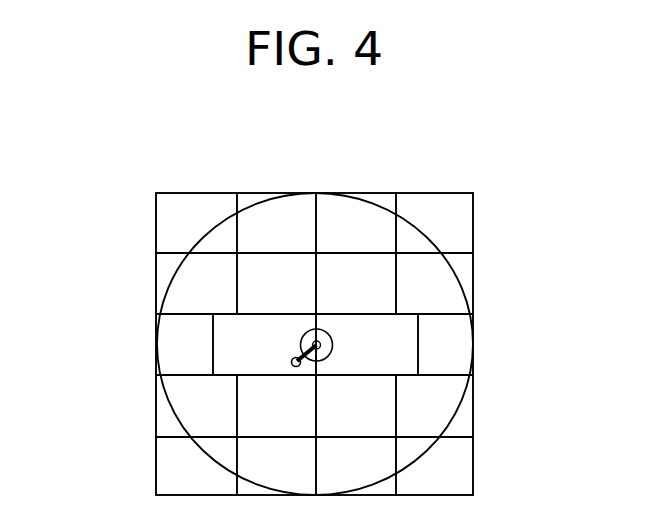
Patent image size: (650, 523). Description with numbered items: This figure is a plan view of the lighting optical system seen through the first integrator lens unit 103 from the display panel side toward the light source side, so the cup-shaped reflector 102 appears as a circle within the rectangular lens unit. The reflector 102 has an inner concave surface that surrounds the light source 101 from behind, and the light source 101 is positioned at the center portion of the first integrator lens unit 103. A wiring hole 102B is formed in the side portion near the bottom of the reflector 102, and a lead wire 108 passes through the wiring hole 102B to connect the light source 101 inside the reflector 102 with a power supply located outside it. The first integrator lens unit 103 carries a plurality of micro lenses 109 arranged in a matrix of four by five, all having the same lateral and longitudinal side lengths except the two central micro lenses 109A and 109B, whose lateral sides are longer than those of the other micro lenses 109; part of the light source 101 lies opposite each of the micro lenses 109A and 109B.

The light source 101 is at (338, 323).
The reflector 102 is at (430, 230).
The wiring hole 102B is at (293, 361).
The first integrator lens unit 103 is at (450, 193).
The lead wire 108 is at (298, 356).
The micro lenses 109 is at (178, 207).
The micro lens 109A is at (228, 350).
The micro lens 109B is at (370, 348).